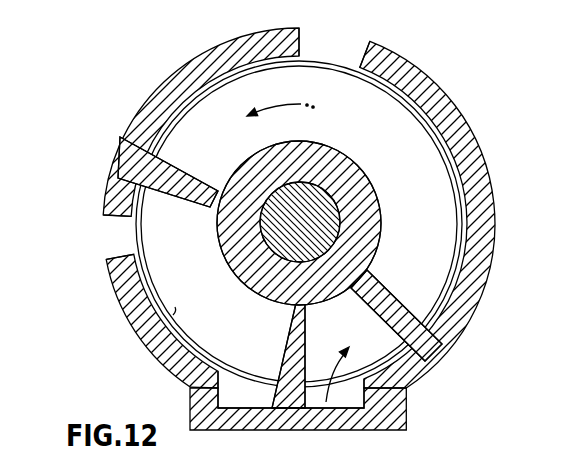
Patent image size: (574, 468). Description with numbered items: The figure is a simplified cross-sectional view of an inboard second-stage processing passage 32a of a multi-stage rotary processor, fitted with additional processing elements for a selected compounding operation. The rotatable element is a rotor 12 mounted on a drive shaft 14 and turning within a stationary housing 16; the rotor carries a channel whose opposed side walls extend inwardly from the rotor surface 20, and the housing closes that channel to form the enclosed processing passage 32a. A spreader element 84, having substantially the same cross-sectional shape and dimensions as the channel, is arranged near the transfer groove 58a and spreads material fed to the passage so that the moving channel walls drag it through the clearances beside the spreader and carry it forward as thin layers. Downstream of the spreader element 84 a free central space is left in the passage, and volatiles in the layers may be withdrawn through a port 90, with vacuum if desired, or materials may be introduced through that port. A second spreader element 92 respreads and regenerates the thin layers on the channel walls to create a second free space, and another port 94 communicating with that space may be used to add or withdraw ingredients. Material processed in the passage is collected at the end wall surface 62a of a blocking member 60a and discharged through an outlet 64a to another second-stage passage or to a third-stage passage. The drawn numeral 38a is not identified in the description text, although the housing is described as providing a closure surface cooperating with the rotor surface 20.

The housing 16 is at (157, 112).
The rotor surface 20 is at (173, 365).
The port 90 is at (368, 16).
The port 94 is at (112, 232).
The spreader element 92 is at (133, 167).
The spreader element 84 is at (398, 304).
The end wall surface 62a is at (286, 352).
The blocking member 60a is at (294, 400).
The outlet 64a is at (245, 398).
The transfer groove 58a is at (317, 397).
The rotor 12 is at (238, 243).
The drive shaft 14 is at (330, 217).
The processing passage 32a is at (410, 161).
The slot 38a is at (171, 321).